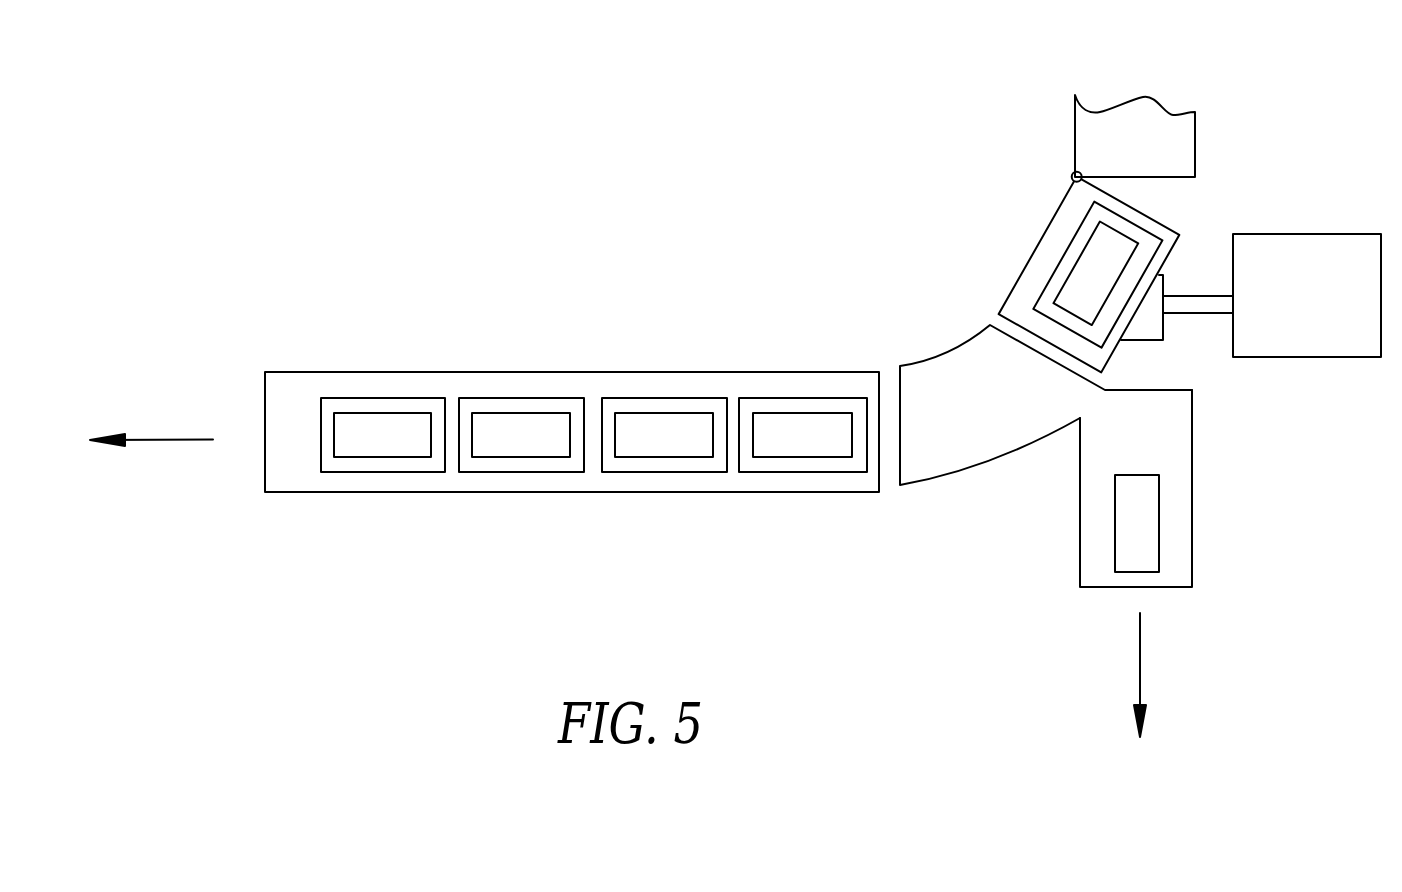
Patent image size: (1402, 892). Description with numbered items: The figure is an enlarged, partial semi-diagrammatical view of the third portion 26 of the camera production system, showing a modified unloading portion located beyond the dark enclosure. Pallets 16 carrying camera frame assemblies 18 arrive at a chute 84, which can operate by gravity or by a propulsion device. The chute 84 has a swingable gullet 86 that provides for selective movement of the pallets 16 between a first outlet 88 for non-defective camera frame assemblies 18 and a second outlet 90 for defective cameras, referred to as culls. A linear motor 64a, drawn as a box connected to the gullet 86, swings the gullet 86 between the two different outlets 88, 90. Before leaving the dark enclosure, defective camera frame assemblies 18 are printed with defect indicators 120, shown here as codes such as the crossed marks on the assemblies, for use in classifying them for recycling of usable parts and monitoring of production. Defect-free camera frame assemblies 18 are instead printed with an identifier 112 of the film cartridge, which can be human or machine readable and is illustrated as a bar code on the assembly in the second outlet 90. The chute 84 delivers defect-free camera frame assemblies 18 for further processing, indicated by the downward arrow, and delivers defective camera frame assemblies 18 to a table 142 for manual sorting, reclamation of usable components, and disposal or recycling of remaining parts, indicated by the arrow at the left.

The third portion 26 is at (848, 180).
The pallet 16 is at (493, 398).
The camera frame assembly 18 is at (784, 468).
The defect indicator 120 is at (566, 422).
The table 142 is at (310, 493).
The first outlet 88 is at (948, 352).
The second outlet 90 is at (1193, 482).
The chute 84 is at (1037, 250).
The swingable gullet 86 is at (1117, 355).
The linear motor 64a is at (1305, 234).
The identifier 112 is at (1153, 535).